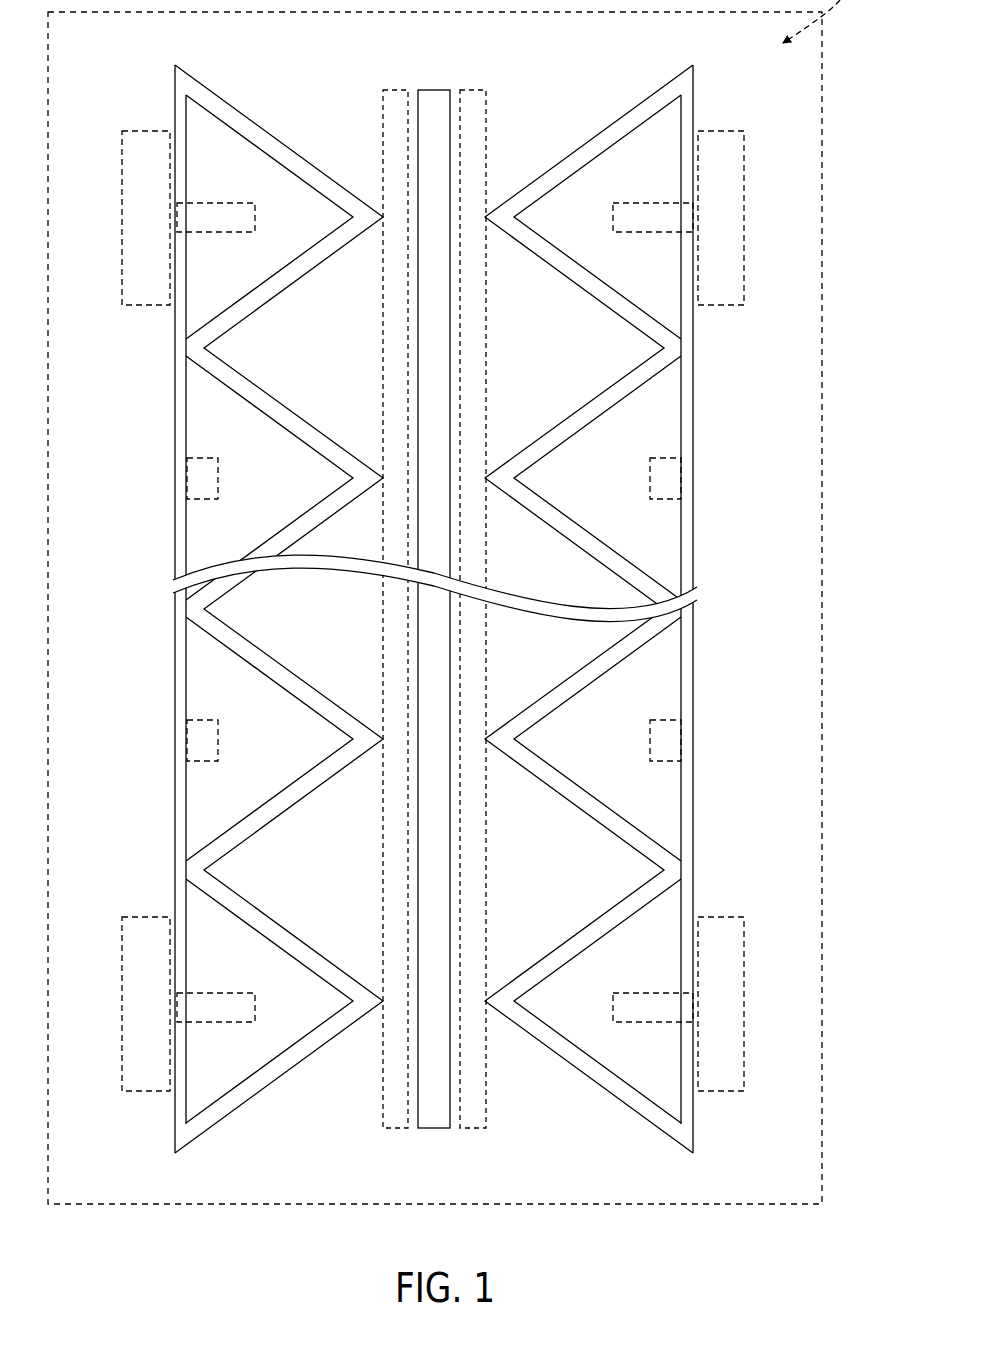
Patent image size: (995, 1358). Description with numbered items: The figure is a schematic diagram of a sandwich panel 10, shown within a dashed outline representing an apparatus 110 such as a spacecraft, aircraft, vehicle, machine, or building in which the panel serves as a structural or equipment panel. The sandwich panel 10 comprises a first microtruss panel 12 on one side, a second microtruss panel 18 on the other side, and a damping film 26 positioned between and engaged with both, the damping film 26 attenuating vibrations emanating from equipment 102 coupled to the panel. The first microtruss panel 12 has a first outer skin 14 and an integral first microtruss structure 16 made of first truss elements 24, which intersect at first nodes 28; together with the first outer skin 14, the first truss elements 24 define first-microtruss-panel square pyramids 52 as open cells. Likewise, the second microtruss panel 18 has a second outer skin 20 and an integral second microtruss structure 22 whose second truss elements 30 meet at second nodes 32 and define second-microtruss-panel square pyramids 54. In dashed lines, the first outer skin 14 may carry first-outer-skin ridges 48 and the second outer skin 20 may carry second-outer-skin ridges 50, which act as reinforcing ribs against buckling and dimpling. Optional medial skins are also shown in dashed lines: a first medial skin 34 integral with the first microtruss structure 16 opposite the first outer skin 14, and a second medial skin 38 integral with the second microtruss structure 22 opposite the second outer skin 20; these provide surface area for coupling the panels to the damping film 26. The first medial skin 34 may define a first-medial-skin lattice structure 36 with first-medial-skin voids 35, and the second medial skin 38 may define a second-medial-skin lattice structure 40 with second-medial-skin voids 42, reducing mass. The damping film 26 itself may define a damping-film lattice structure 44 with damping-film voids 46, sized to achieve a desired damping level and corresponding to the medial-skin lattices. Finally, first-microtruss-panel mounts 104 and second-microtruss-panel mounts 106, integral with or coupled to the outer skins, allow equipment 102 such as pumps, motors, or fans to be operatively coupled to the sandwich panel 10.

The sandwich panel 10 is at (659, 47).
The first microtruss panel 12 is at (175, 448).
The first outer skin 14 is at (175, 515).
The first microtruss structure 16 is at (302, 88).
The second microtruss panel 18 is at (694, 448).
The second outer skin 20 is at (694, 515).
The second microtruss structure 22 is at (570, 88).
The first truss elements 24 is at (325, 175).
The damping film 26 is at (436, 87).
The first nodes 28 is at (198, 348).
The second truss elements 30 is at (543, 175).
The second nodes 32 is at (670, 348).
The first medial skin 34 is at (395, 1130).
The first-medial-skin voids 35 is at (393, 325).
The first-medial-skin lattice structure 36 is at (381, 1108).
The second medial skin 38 is at (471, 1130).
The second-medial-skin lattice structure 40 is at (488, 1108).
The second-medial-skin voids 42 is at (477, 325).
The damping-film lattice structure 44 is at (433, 1112).
The damping-film voids 46 is at (436, 845).
The first-outer-skin ridges 48 is at (218, 478).
The second-outer-skin ridges 50 is at (650, 478).
The first-microtruss-panel square pyramids 52 is at (265, 180).
The second-microtruss-panel square pyramids 54 is at (605, 180).
The equipment 102 is at (122, 218).
The first-microtruss-panel mounts 104 is at (256, 222).
The second-microtruss-panel mounts 106 is at (612, 222).
The apparatus 110 is at (826, 343).